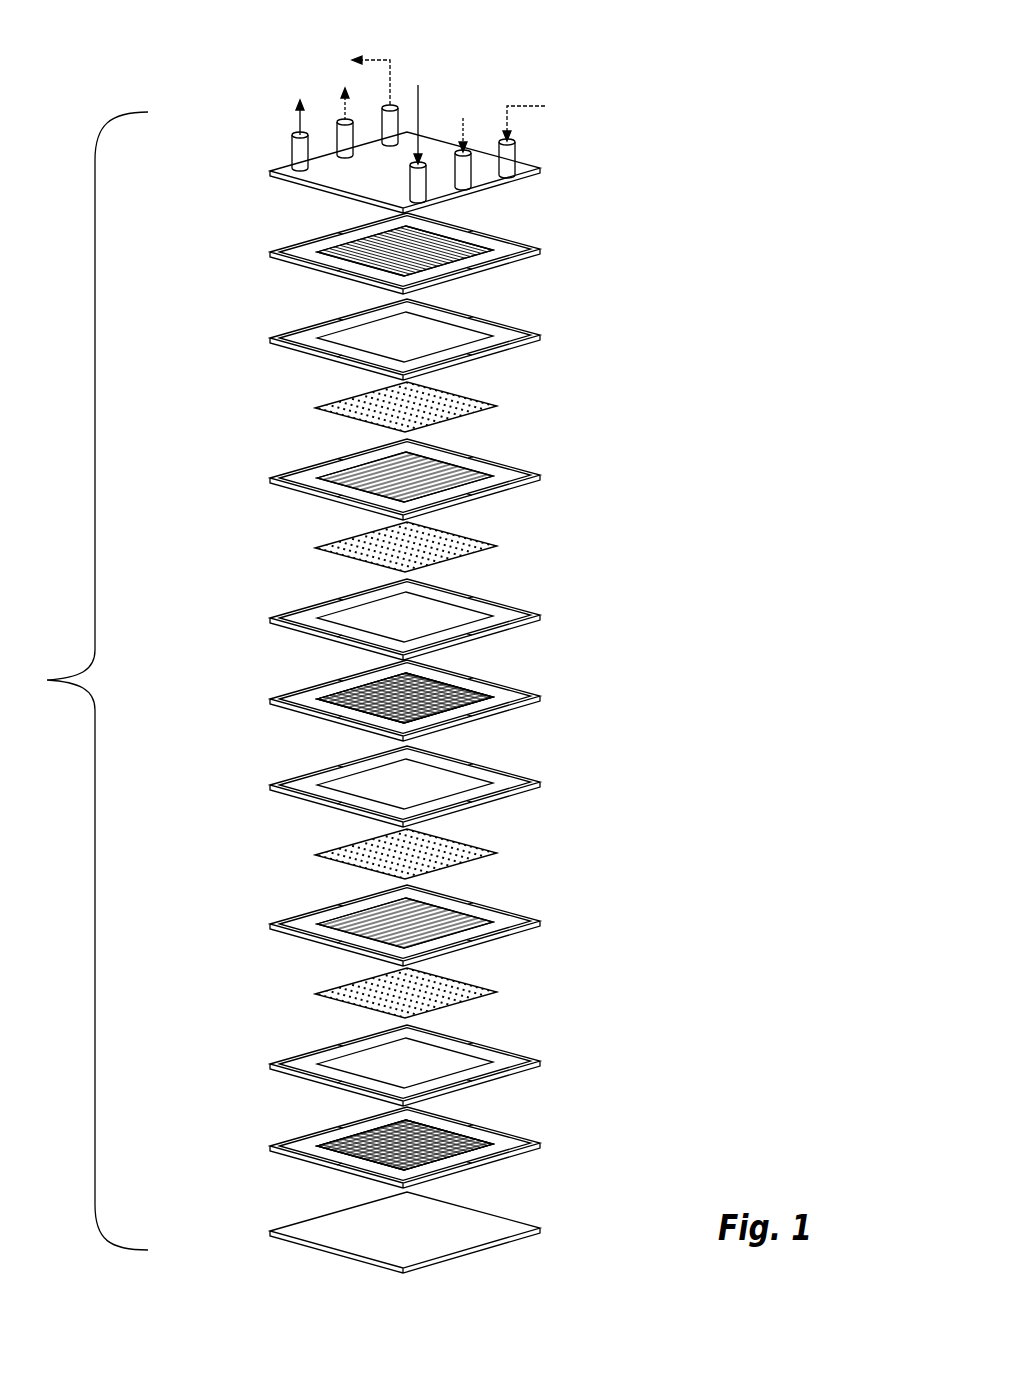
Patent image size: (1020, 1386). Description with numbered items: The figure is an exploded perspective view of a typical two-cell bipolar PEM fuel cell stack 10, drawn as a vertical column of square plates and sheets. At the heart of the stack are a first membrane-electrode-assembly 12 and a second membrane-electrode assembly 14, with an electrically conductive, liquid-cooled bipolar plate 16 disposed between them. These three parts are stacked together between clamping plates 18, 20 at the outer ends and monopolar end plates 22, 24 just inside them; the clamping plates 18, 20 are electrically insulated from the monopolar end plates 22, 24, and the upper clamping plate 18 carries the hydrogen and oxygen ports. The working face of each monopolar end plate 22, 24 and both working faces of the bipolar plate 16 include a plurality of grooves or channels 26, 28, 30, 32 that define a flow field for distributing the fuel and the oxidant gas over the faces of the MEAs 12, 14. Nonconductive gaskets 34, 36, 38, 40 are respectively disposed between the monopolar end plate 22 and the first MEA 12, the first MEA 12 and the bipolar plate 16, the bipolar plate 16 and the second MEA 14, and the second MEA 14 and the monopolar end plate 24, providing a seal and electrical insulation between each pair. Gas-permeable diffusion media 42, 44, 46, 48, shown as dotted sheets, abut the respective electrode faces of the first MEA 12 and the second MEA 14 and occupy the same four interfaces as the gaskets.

The fuel cell stack 10 is at (80, 681).
The first membrane-electrode-assembly 12 is at (306, 494).
The second membrane-electrode assembly 14 is at (506, 934).
The bipolar plate 16 is at (306, 717).
The clamping plate 18 is at (306, 192).
The clamping plate 20 is at (506, 1236).
The monopolar end plate 22 is at (306, 274).
The monopolar end plate 24 is at (506, 1157).
The channels 26 is at (466, 250).
The channels 28 is at (455, 690).
The channels 30 is at (390, 716).
The channels 32 is at (485, 1140).
The nonconductive gasket 34 is at (304, 343).
The nonconductive gasket 36 is at (303, 624).
The nonconductive gasket 38 is at (500, 790).
The nonconductive gasket 40 is at (500, 1075).
The gas-permeable diffusion medium 42 is at (318, 403).
The gas-permeable diffusion medium 44 is at (318, 546).
The gas-permeable diffusion medium 46 is at (495, 849).
The gas-permeable diffusion medium 48 is at (497, 985).